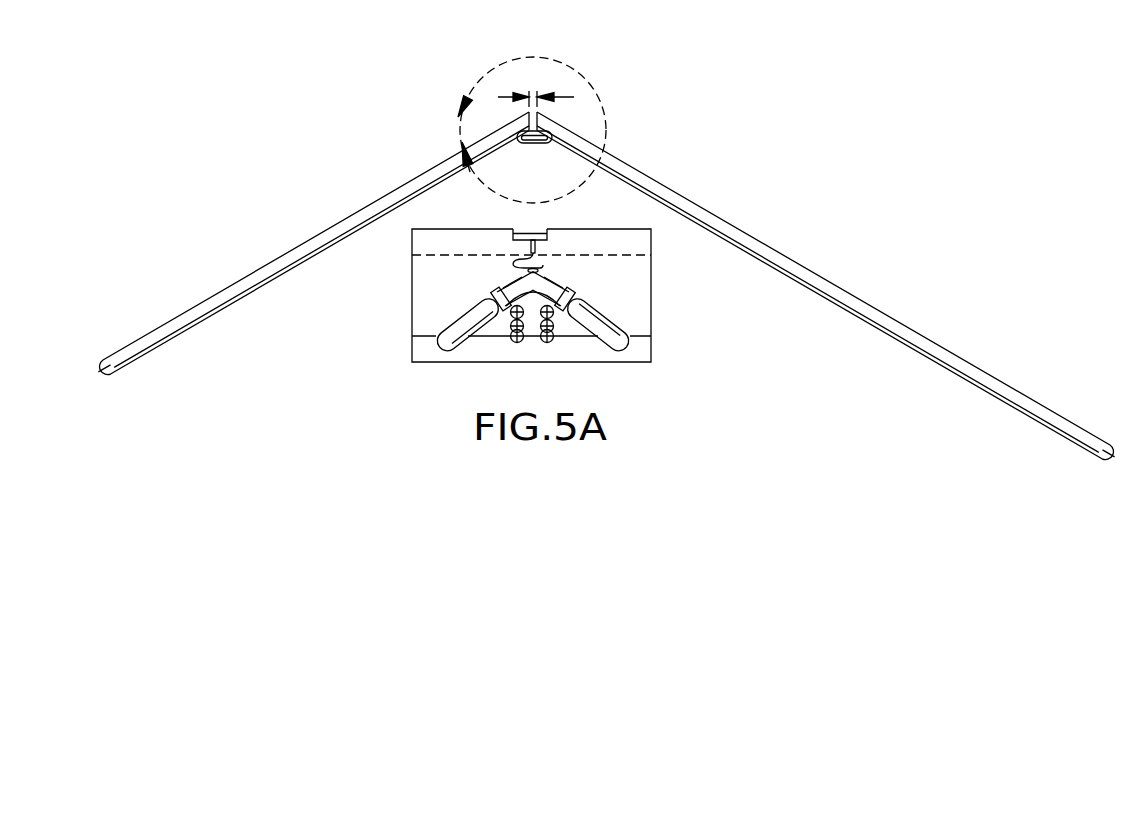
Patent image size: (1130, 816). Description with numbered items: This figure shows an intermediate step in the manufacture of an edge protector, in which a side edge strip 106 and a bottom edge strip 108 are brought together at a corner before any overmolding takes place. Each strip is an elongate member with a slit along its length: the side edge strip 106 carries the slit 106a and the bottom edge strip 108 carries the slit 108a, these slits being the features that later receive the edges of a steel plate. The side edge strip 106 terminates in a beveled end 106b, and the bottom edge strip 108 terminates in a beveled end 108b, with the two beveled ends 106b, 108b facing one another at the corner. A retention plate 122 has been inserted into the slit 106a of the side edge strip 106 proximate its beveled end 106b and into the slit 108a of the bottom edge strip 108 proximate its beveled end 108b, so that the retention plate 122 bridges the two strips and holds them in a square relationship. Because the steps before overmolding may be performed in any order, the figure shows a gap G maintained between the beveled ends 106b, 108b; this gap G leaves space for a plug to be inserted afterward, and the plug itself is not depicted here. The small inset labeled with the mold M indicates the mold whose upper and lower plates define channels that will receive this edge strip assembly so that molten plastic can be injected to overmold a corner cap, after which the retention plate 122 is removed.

The side edge strip 106 is at (826, 273).
The slit 106a is at (778, 272).
The beveled end 106b is at (547, 123).
The bottom edge strip 108 is at (313, 216).
The slit 108a is at (330, 247).
The beveled end 108b is at (522, 125).
The retention plate 122 is at (533, 144).
The gap G is at (535, 107).
The mold M is at (640, 320).